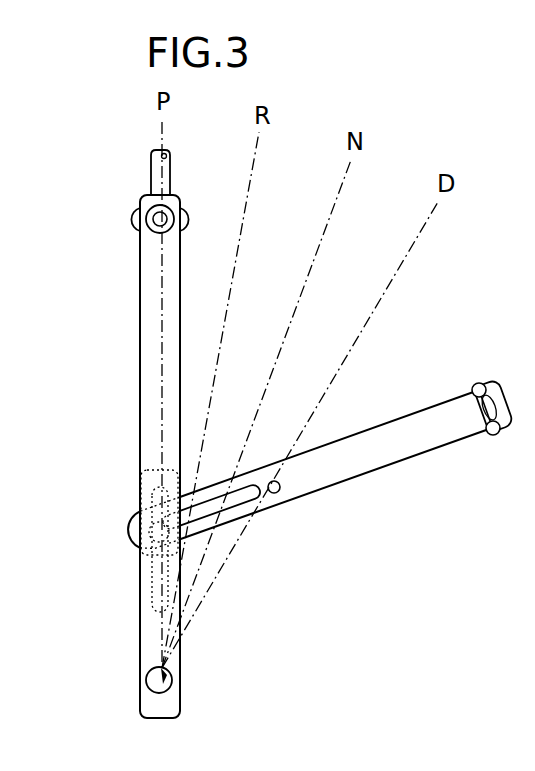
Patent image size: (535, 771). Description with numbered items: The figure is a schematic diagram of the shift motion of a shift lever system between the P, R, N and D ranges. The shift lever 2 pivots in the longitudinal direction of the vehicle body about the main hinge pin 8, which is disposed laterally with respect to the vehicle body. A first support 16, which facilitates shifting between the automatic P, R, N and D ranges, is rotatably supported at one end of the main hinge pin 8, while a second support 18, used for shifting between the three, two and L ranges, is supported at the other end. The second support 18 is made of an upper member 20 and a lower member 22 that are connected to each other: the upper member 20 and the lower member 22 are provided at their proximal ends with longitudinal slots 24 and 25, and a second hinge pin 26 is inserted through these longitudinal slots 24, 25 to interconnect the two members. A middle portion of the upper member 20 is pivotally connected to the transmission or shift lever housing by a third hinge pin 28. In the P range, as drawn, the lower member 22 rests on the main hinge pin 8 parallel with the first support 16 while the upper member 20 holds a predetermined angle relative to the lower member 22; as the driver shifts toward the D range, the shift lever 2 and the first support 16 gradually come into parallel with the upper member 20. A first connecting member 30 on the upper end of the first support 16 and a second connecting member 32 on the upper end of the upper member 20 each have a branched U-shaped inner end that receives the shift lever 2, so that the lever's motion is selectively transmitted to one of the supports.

The shift lever 2 is at (153, 173).
The main hinge pin 8 is at (148, 680).
The first support 16 is at (143, 300).
The second support 18 is at (90, 412).
The upper member 20 is at (220, 500).
The lower member 22 is at (143, 490).
The longitudinal slot 24 is at (150, 590).
The longitudinal slot 25 is at (243, 507).
The second hinge pin 26 is at (142, 540).
The third hinge pin 28 is at (278, 493).
The first connecting member 30 is at (128, 221).
The second connecting member 32 is at (494, 436).